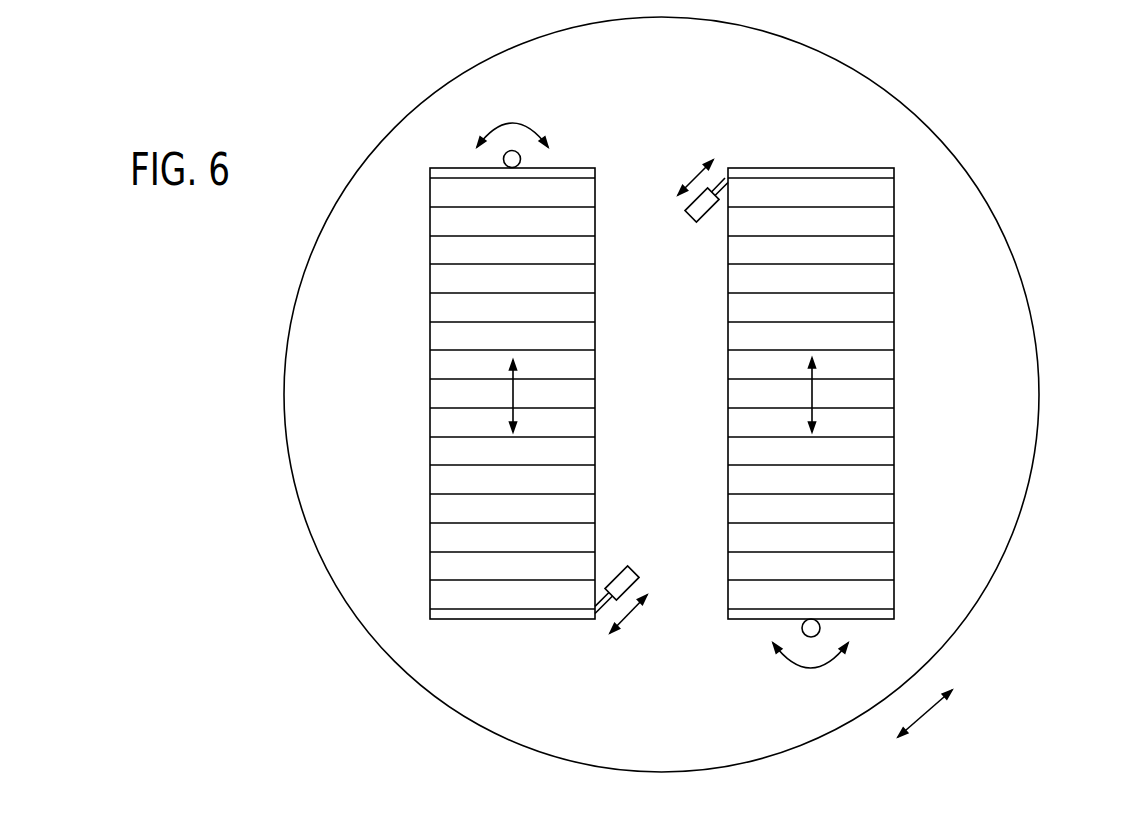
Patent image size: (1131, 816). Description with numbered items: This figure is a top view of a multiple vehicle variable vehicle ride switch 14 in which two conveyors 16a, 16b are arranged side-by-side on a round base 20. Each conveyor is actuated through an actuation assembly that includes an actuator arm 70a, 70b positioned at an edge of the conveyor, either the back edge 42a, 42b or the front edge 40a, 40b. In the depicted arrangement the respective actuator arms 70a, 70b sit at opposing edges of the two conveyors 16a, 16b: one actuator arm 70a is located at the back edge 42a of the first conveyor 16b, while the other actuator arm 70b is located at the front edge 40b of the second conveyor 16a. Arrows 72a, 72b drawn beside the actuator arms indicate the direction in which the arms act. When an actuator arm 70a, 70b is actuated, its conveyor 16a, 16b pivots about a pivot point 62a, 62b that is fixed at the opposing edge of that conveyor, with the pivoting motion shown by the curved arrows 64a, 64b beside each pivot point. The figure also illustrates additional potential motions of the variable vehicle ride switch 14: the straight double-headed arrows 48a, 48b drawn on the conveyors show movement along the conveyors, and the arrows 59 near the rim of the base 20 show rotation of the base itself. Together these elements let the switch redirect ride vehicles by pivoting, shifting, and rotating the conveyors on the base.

The variable vehicle ride switch 14 is at (232, 372).
The base 20 is at (325, 503).
The conveyor 16a is at (894, 278).
The conveyor 16b is at (430, 593).
The front edge 40a is at (462, 168).
The front edge 40b is at (855, 169).
The back edge 42a is at (482, 619).
The back edge 42b is at (762, 619).
The arrows 48a is at (513, 392).
The arrows 48b is at (812, 393).
The pivot point 62a is at (521, 157).
The pivot point 62b is at (820, 627).
The arrows 64a is at (513, 123).
The arrows 64b is at (810, 668).
The actuator arm 70a is at (639, 571).
The actuator arm 70b is at (688, 213).
The arrows 72a is at (630, 615).
The arrows 72b is at (695, 180).
The arrows 59 is at (925, 713).